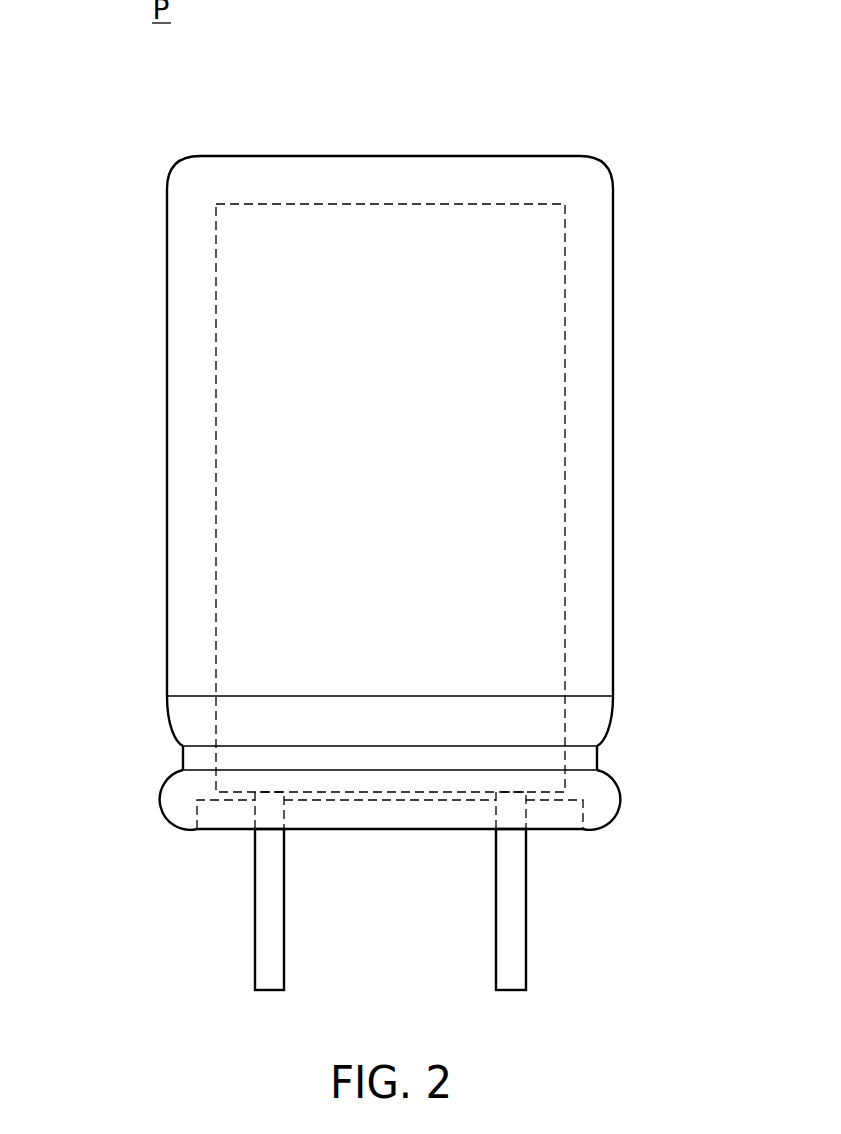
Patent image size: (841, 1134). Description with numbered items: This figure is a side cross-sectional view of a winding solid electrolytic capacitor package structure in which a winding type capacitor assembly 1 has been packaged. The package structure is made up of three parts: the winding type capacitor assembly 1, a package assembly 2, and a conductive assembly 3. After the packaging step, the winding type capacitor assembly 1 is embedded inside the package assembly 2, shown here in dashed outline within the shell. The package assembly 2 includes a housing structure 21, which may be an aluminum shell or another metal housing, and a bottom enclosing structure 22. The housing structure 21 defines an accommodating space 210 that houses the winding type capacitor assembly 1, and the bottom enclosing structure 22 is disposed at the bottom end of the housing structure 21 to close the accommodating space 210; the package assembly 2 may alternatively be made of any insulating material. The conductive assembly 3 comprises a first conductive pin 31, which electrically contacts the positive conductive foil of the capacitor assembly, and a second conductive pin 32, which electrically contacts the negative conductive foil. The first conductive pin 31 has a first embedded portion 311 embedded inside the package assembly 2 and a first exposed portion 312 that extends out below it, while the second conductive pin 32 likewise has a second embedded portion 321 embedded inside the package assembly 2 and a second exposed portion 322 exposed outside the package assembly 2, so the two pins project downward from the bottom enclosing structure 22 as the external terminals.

The winding type capacitor assembly 1 is at (328, 451).
The accommodating space 210 is at (216, 351).
The package assembly 2 is at (321, 493).
The housing structure 21 is at (197, 664).
The bottom enclosing structure 22 is at (343, 800).
The conductive assembly 3 is at (383, 891).
The first conductive pin 31 is at (184, 891).
The first embedded portion 311 is at (267, 809).
The first exposed portion 312 is at (270, 925).
The second conductive pin 32 is at (593, 891).
The second embedded portion 321 is at (513, 808).
The second exposed portion 322 is at (512, 923).